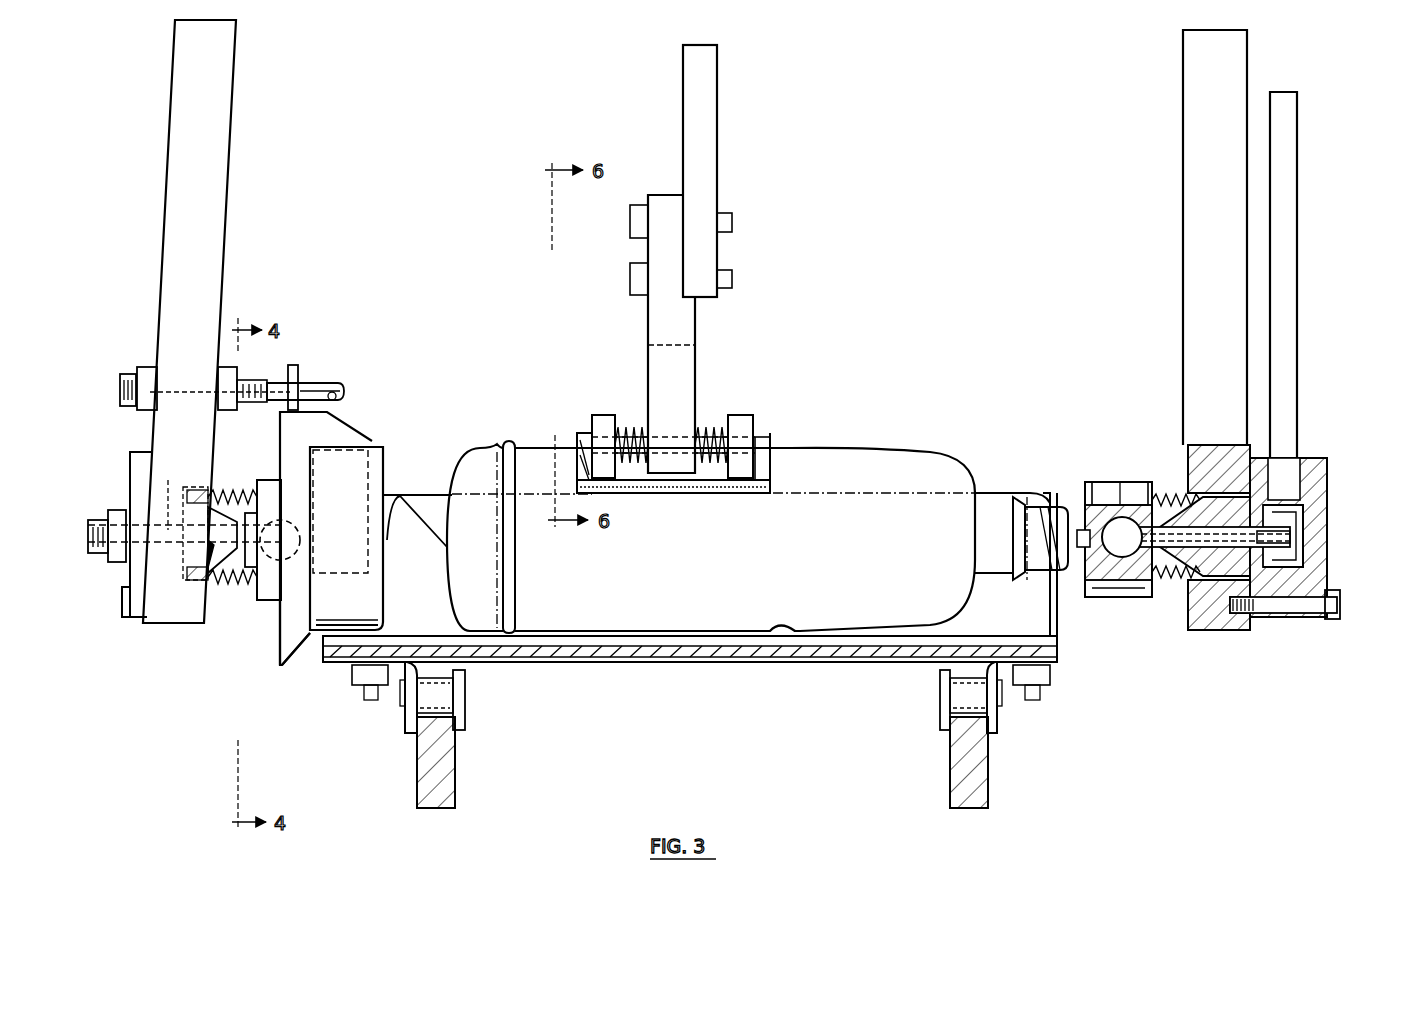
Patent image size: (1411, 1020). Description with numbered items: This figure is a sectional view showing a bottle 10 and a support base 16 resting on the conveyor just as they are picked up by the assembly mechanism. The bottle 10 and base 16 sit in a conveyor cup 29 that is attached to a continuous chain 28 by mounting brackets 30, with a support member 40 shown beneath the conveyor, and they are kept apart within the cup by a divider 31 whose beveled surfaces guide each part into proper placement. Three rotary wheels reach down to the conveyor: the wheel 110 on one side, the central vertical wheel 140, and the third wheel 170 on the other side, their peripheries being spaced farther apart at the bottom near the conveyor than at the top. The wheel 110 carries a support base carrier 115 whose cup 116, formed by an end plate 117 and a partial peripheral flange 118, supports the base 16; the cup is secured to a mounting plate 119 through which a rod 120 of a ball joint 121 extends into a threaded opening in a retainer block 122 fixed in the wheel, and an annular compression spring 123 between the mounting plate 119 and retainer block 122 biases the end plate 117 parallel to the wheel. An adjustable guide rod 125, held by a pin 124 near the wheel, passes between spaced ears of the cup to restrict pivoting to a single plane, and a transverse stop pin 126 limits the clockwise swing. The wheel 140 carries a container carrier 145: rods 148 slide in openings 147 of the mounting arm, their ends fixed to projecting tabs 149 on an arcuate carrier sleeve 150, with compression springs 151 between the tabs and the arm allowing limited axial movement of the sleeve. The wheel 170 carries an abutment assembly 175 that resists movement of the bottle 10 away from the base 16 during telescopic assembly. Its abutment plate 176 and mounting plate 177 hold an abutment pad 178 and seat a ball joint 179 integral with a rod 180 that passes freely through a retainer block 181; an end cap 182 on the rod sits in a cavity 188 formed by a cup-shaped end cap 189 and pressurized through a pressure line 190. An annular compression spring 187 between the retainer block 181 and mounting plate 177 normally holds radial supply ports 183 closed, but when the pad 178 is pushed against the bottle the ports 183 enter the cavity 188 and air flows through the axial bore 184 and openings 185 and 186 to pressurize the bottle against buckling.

The bottle 10 is at (904, 465).
The support base 16 is at (358, 601).
The continuous chain 28 is at (446, 688).
The conveyor cup 29 is at (660, 652).
The mounting bracket 30 is at (405, 718).
The divider 31 is at (432, 553).
The standoff 40 is at (448, 787).
The rotary wheel 110 is at (215, 127).
The support base carrier 115 is at (270, 658).
The cup 116 is at (320, 430).
The end plate 117 is at (290, 636).
The partial peripheral flange 118 is at (370, 439).
The mounting plate 119 is at (268, 598).
The rod 120 is at (232, 553).
The ball joint 121 is at (328, 528).
The retainer block 122 is at (158, 505).
The annular compression spring 123 is at (230, 490).
The pin 124 is at (297, 362).
The adjustable guide rod 125 is at (330, 392).
The transverse stop pin 126 is at (337, 395).
The rotary wheel 140 is at (712, 122).
The container carrier 145 is at (750, 388).
The opening 147 is at (666, 441).
The rod 148 is at (577, 437).
The projecting tab 149 is at (605, 418).
The carrier sleeve 150 is at (772, 468).
The compression spring 151 is at (633, 430).
The rotary wheel 170 is at (1188, 122).
The abutment assembly 175 is at (1229, 648).
The abutment plate 176 is at (1107, 483).
The mounting plate 177 is at (1135, 483).
The abutment pad 178 is at (1089, 483).
The ball joint 179 is at (1128, 555).
The rod 180 is at (1203, 579).
The retainer block 181 is at (1327, 582).
The end cap 182 is at (1305, 509).
The radial supply port 183 is at (1258, 524).
The axial bore 184 is at (1225, 542).
The opening 185 is at (1128, 562).
The opening 186 is at (1078, 548).
The annular compression spring 187 is at (1173, 497).
The cavity 188 is at (1304, 538).
The cup-shaped end cap 189 is at (1317, 460).
The pressure line 190 is at (1290, 170).